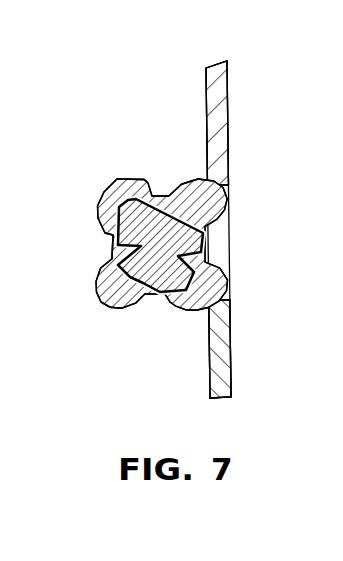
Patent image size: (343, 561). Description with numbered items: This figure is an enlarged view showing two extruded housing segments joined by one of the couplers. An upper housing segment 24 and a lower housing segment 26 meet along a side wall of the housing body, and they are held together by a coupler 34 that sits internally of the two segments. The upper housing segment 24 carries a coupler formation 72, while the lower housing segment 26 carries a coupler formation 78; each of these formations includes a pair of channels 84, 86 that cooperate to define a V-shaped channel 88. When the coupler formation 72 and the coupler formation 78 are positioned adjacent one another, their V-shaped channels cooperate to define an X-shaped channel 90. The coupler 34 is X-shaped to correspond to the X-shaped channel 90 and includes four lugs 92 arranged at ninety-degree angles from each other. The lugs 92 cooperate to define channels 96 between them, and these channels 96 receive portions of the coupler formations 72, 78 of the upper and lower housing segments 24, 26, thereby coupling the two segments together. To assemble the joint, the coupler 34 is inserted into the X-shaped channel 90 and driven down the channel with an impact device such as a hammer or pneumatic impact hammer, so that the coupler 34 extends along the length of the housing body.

The upper housing segment 24 is at (227, 91).
The lower housing segment 26 is at (232, 381).
The coupler 34 is at (160, 288).
The coupler formation 72 is at (173, 229).
The coupler formation 78 is at (104, 329).
The channel 84 is at (128, 205).
The channel 86 is at (170, 211).
The V-shaped channel 88 is at (188, 238).
The X-shaped channel 90 is at (181, 282).
The lug 92 is at (111, 242).
The channel 96 is at (226, 167).